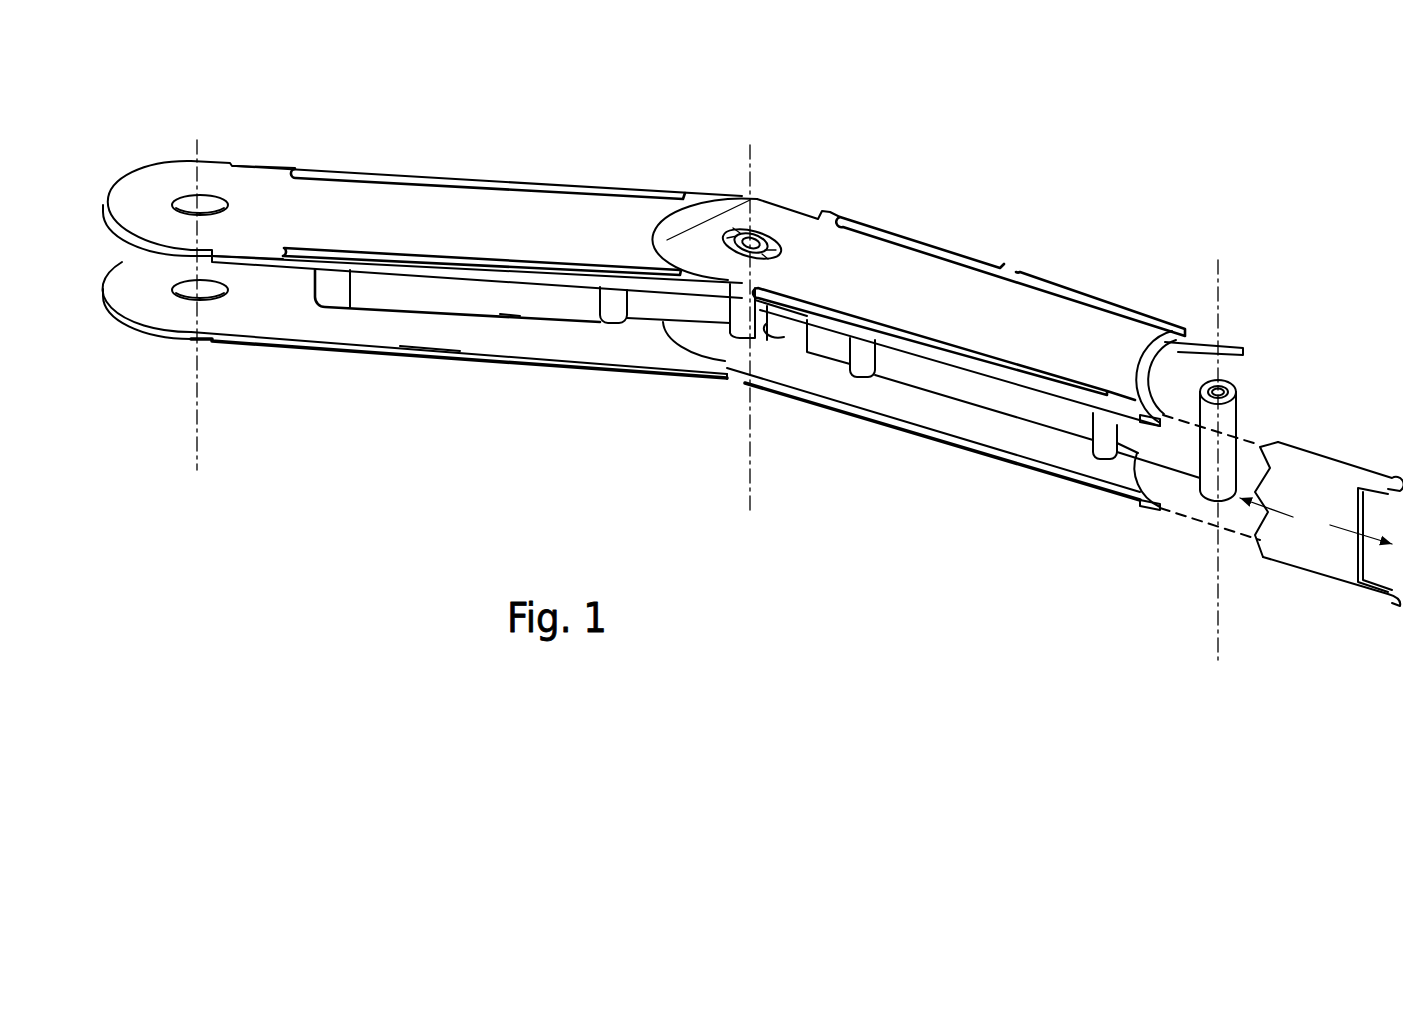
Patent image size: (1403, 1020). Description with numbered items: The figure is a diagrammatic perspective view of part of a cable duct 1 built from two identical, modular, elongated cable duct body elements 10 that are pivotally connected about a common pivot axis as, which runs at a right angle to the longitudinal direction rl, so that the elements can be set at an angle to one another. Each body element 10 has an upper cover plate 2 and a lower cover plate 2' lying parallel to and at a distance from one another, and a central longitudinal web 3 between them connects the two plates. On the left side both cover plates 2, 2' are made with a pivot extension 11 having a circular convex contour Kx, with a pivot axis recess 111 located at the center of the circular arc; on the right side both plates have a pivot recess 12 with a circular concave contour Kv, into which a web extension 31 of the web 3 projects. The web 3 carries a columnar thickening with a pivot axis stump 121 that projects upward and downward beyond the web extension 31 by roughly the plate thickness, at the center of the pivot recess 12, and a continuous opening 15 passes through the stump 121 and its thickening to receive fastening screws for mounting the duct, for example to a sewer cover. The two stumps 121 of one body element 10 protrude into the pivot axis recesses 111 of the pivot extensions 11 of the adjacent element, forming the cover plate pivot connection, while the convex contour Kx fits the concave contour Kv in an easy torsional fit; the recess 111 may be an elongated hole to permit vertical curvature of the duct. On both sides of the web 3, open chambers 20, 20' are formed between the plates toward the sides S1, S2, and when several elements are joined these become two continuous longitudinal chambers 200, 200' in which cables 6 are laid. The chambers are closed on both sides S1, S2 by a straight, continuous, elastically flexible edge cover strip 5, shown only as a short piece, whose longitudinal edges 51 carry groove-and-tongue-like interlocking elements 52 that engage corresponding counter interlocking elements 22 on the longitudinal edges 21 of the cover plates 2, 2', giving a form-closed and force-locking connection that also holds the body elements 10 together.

The cable duct 1 is at (465, 137).
The upper cover plate 2 is at (422, 168).
The lower cover plate 2' is at (414, 338).
The web 3 is at (467, 298).
The edge cover strip 5 is at (1312, 522).
The cables 6 is at (425, 327).
The cable duct body element 10 is at (546, 168).
The pivot extension 11 is at (162, 192).
The pivot recess 12 is at (723, 193).
The continuous opening 15 is at (1228, 380).
The open chamber 20 is at (731, 409).
The open chamber 20' is at (866, 257).
The longitudinal edge 21 is at (268, 163).
The counter interlocking element 22 is at (362, 250).
The web extension 31 is at (1173, 445).
The longitudinal edge 51 is at (1323, 468).
The interlocking element 52 is at (1375, 483).
The pivot axis recess 111 is at (205, 200).
The pivot axis stump 121 is at (1238, 397).
The continuous longitudinal chamber 200 is at (847, 430).
The continuous longitudinal chamber 200' is at (806, 226).
The convex contour Kx is at (135, 170).
The concave contour Kv is at (668, 236).
The pivot axis as is at (706, 420).
The side S1 is at (1060, 512).
The side S2 is at (980, 247).
The longitudinal direction rl is at (703, 102).